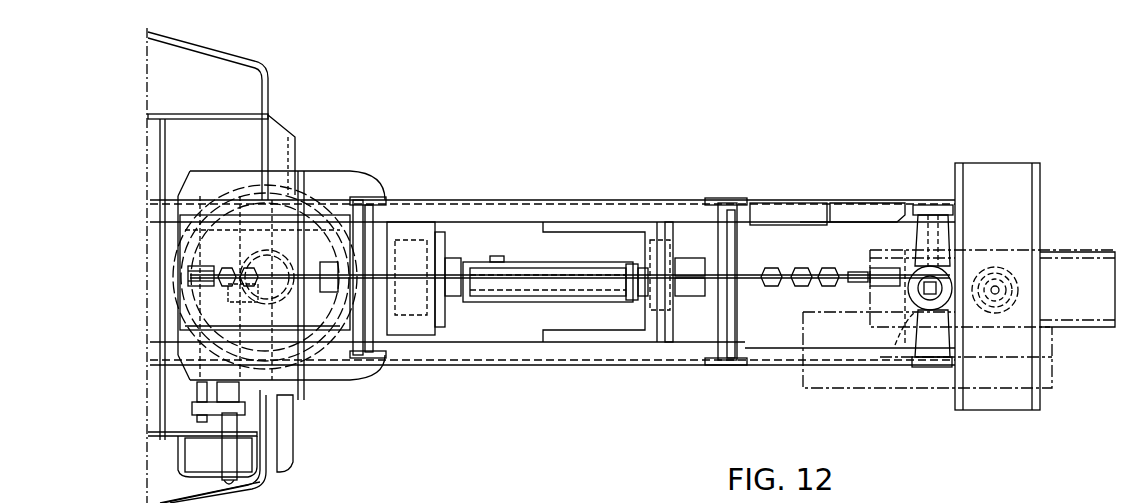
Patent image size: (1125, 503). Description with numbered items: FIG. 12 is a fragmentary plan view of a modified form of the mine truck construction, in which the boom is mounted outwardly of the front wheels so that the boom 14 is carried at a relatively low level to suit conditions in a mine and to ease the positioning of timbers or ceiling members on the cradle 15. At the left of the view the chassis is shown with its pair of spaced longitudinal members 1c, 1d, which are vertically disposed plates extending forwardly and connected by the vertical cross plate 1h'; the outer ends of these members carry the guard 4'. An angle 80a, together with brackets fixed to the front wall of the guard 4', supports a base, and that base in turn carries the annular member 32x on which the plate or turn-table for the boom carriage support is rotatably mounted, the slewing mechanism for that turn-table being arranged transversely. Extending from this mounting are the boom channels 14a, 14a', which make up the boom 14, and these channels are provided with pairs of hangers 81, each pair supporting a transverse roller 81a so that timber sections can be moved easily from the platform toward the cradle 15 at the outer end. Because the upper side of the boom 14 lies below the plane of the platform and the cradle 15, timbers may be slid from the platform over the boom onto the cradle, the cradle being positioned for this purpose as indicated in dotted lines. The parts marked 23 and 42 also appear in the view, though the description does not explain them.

The longitudinal member 1c is at (155, 114).
The vertical cross plate 1h' is at (138, 279).
The longitudinal member 1d is at (148, 436).
The guard 4' is at (216, 492).
The boom 14 is at (552, 366).
The boom channel 14a is at (582, 310).
The boom channel 14a' is at (552, 195).
The cradle 15 is at (1035, 286).
The hydraulic cylinder 23 is at (430, 305).
The annular member 32x is at (297, 362).
The mounting bolt assembly 42 is at (213, 432).
The angle 80a is at (270, 420).
The hangers 81 is at (362, 200).
The transverse roller 81a is at (375, 208).